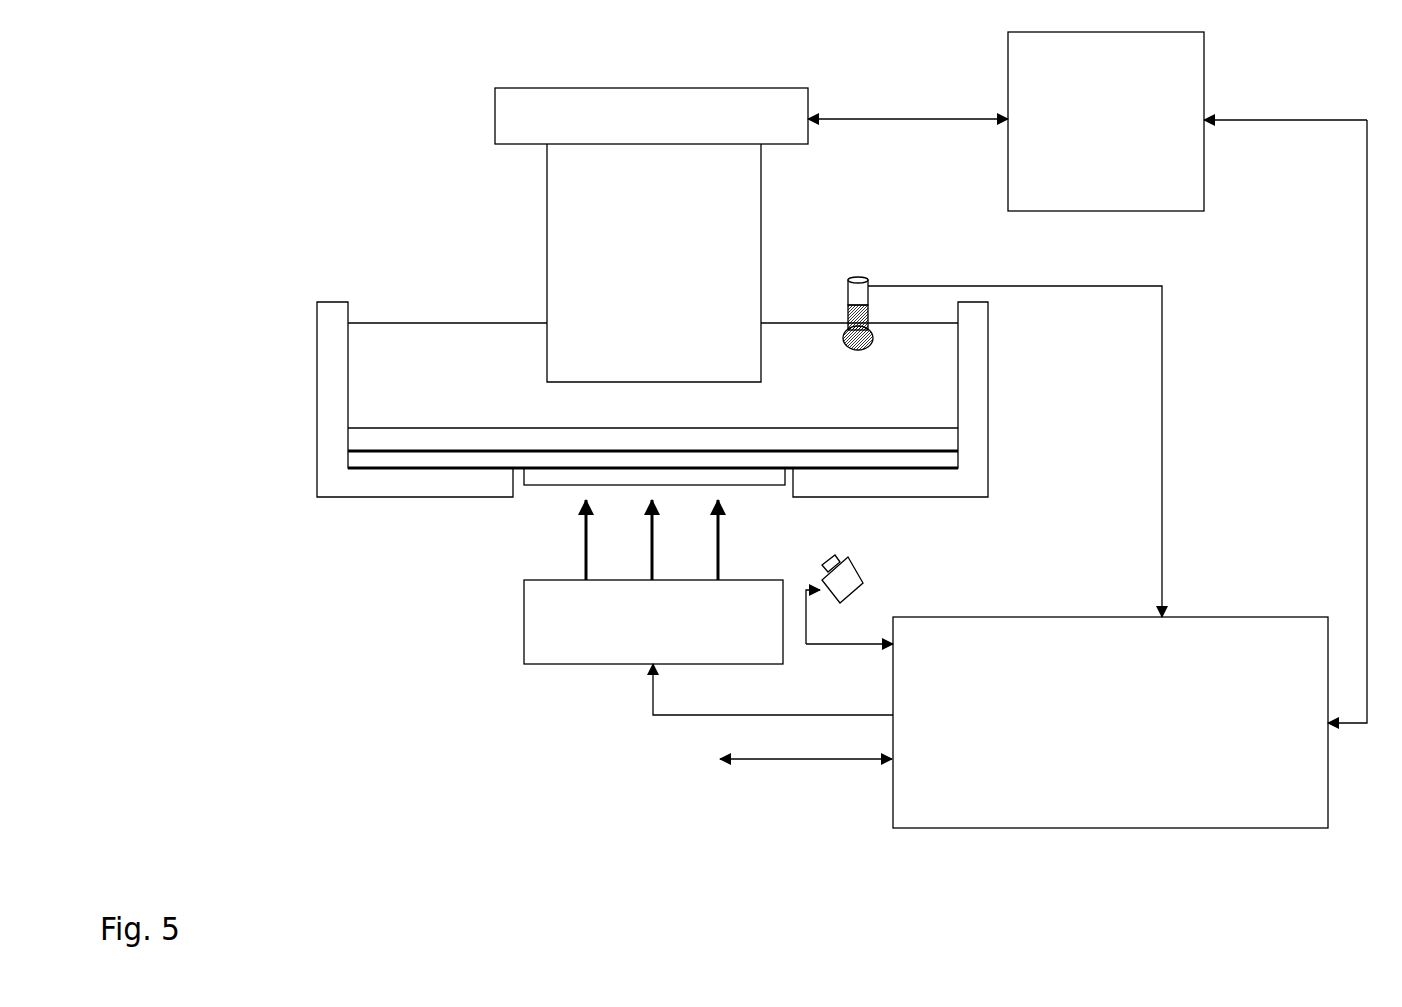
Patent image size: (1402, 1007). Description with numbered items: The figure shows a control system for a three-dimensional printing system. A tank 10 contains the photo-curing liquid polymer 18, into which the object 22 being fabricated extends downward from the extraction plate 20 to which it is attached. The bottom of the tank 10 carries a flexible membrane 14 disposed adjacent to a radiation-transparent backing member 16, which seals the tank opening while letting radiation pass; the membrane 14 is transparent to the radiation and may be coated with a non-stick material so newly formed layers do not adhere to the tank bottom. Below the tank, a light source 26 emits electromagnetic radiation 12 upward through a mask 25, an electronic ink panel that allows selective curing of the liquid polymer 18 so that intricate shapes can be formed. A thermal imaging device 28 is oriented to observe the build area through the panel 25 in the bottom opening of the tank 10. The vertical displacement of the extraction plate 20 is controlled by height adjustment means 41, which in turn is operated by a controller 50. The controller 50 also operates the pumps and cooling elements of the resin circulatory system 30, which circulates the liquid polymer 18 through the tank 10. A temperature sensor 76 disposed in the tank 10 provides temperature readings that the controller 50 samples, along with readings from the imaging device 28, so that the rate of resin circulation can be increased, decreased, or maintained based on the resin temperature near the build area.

The tank 10 is at (330, 321).
The electromagnetic radiation 12 is at (532, 560).
The flexible membrane 14 is at (350, 436).
The radiation-transparent backing member 16 is at (350, 456).
The photo-curing liquid polymer 18 is at (882, 378).
The extraction plate 20 is at (667, 130).
The object 22 is at (669, 279).
The mask 25 is at (558, 487).
The light source 26 is at (668, 640).
The thermal imaging device 28 is at (864, 583).
The resin circulatory system 30 is at (614, 760).
The height adjustment means 41 is at (1122, 171).
The controller 50 is at (1126, 735).
The temperature sensor 76 is at (847, 298).